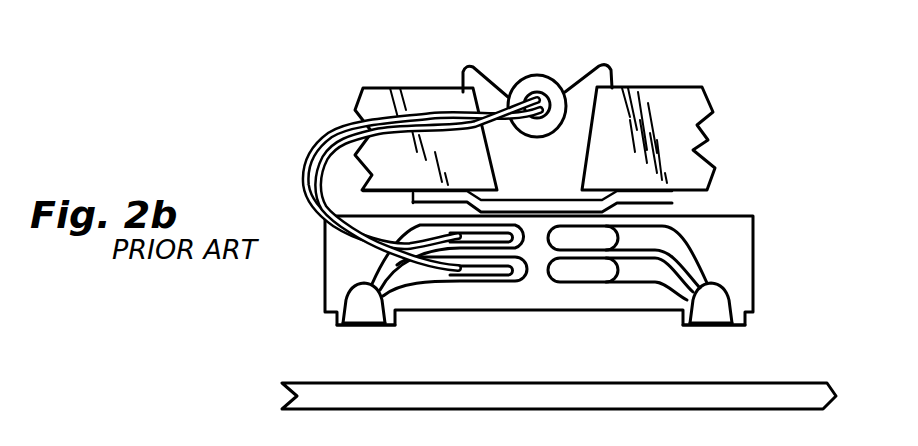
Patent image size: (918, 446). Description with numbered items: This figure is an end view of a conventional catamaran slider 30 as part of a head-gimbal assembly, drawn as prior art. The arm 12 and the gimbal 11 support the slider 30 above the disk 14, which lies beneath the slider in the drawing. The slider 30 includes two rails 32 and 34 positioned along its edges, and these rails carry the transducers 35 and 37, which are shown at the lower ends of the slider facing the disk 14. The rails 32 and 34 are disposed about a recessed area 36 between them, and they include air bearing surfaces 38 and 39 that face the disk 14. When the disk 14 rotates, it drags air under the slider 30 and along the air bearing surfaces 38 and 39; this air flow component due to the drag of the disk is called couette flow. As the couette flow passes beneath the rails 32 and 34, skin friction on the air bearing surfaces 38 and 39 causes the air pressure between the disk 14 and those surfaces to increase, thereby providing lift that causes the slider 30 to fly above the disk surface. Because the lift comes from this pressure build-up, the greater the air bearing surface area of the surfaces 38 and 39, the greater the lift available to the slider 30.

The gimbal 11 is at (672, 202).
The arm 12 is at (666, 87).
The disk 14 is at (502, 381).
The slider 30 is at (757, 261).
The rail 32 is at (348, 329).
The rail 34 is at (731, 330).
The transducer 35 is at (338, 290).
The recessed area 36 is at (547, 311).
The transducer 37 is at (718, 300).
The air bearing surface 38 is at (386, 330).
The air bearing surface 39 is at (703, 330).